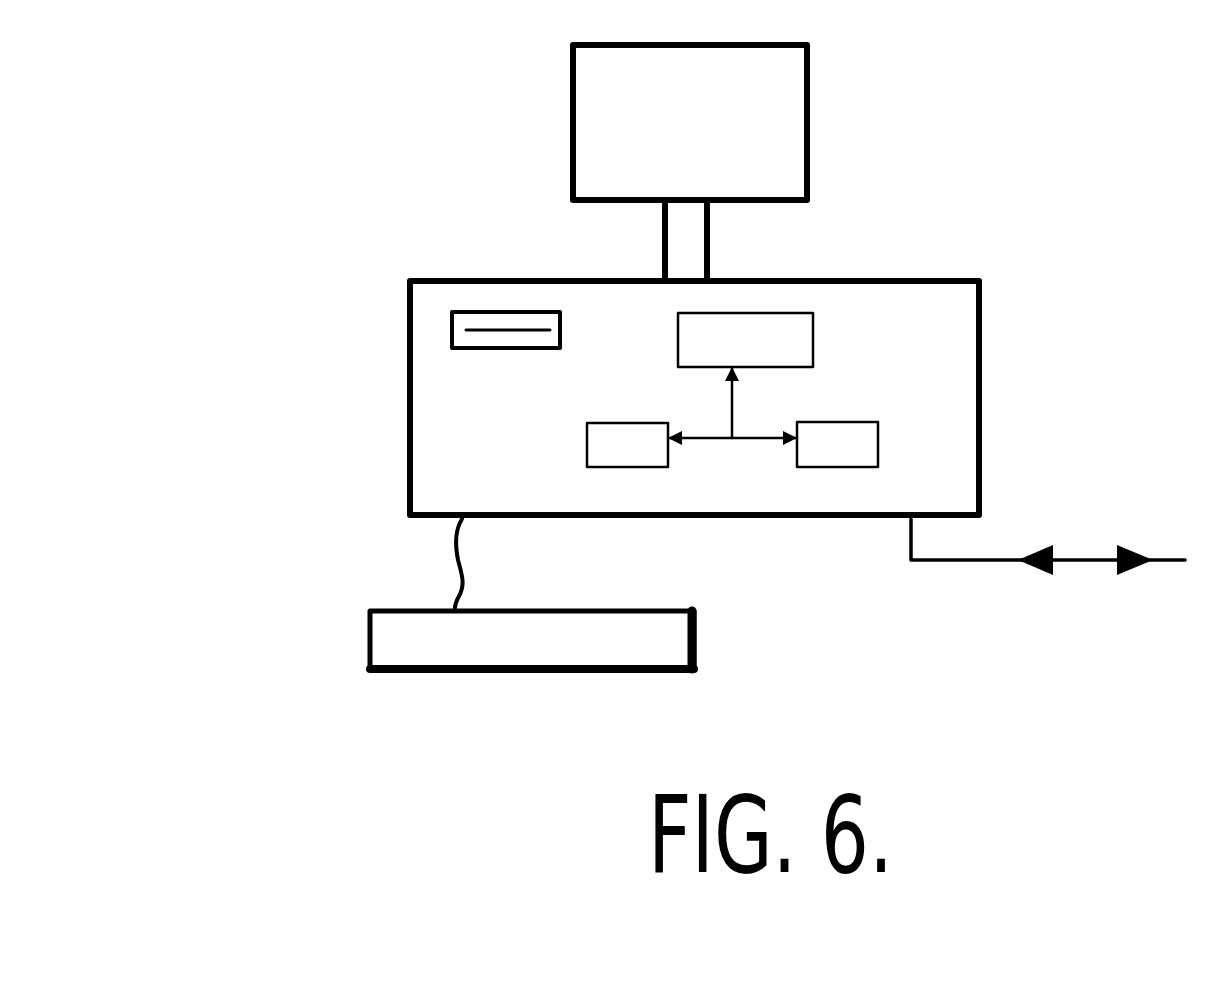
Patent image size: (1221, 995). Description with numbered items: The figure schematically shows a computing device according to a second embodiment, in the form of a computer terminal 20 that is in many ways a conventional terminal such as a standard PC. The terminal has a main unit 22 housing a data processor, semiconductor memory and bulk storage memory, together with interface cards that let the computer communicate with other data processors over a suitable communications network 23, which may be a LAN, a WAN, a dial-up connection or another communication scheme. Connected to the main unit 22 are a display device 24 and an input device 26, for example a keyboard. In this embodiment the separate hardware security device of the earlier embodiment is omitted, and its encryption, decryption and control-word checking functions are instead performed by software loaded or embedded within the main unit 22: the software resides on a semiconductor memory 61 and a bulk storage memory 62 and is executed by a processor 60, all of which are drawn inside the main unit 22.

The computer terminal 20 is at (308, 352).
The main unit 22 is at (407, 473).
The communications network 23 is at (1183, 561).
The display device 24 is at (598, 121).
The input device 26 is at (367, 651).
The processor 60 is at (770, 313).
The semiconductor memory 61 is at (833, 422).
The bulk storage memory 62 is at (587, 445).